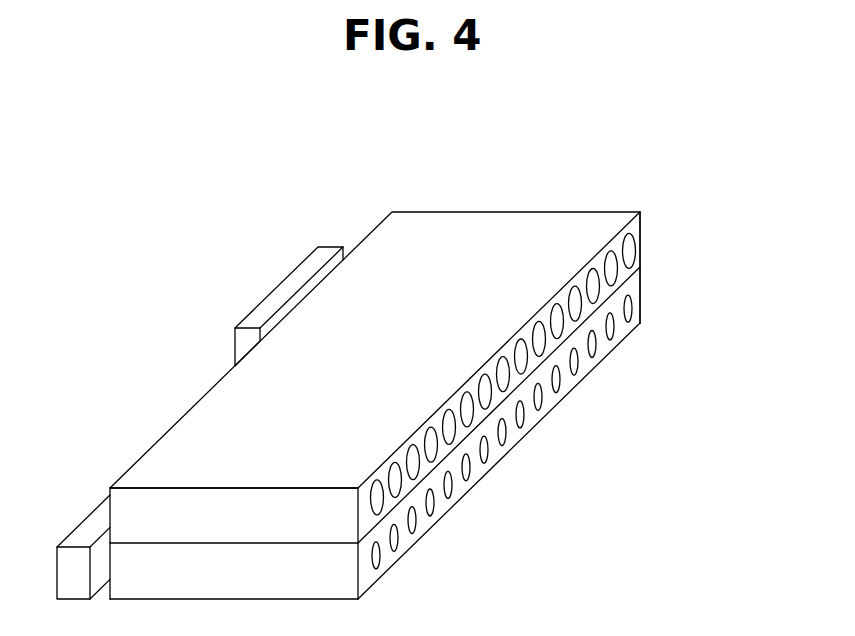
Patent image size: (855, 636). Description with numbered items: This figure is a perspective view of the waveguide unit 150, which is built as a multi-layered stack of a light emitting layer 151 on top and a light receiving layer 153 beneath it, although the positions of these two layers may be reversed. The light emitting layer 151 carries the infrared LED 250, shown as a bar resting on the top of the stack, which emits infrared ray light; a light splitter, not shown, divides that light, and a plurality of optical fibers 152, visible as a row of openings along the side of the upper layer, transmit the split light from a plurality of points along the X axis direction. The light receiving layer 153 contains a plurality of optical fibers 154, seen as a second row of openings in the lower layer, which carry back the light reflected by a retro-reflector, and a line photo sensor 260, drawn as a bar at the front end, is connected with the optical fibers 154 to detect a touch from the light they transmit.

The waveguide unit 150 is at (453, 381).
The light emitting layer 151 is at (420, 353).
The optical fibers 152 is at (588, 268).
The light receiving layer 153 is at (420, 433).
The optical fibers 154 is at (605, 318).
The infrared LED 250 is at (266, 295).
The line photo sensor 260 is at (75, 527).